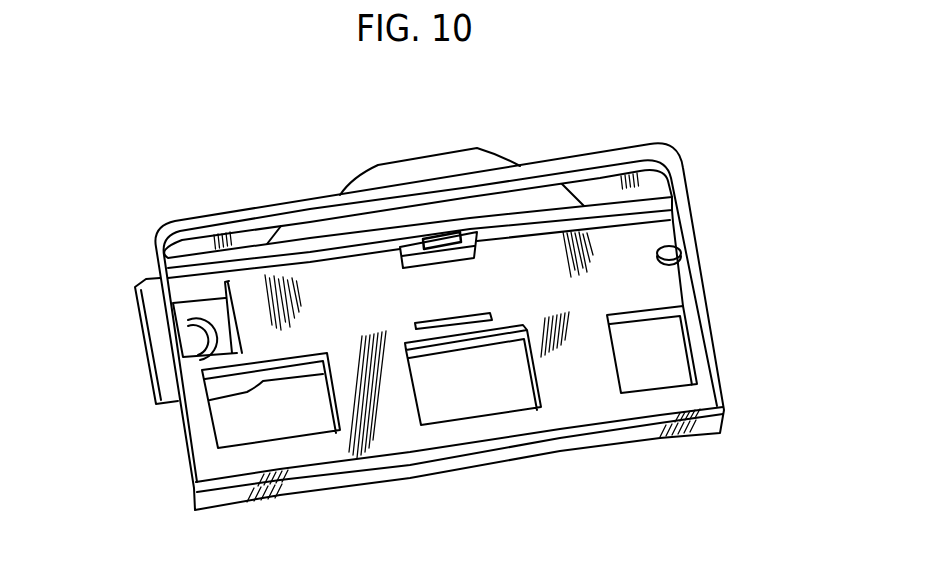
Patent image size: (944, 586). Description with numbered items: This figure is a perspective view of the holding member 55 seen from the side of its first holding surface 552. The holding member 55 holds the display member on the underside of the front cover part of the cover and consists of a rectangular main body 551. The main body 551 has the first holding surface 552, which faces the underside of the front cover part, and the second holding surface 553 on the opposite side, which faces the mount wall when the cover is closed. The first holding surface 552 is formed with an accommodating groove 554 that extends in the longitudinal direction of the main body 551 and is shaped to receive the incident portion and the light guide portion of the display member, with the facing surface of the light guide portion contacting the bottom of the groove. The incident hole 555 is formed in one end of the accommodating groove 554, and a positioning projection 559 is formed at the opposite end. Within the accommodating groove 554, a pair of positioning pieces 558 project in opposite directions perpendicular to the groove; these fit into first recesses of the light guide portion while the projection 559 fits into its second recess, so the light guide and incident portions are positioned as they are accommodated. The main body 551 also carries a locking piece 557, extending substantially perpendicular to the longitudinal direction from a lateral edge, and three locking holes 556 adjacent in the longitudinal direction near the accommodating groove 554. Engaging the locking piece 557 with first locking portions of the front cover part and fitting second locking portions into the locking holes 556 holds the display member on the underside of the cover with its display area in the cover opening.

The holding member 55 is at (297, 140).
The main body 551 is at (734, 424).
The first holding surface 552 is at (603, 407).
The second holding surface 553 is at (408, 480).
The accommodating groove 554 is at (611, 253).
The incident hole 555 is at (193, 340).
The locking holes 556 is at (538, 383).
The locking piece 557 is at (450, 167).
The positioning pieces 558 is at (463, 256).
The positioning projection 559 is at (674, 253).